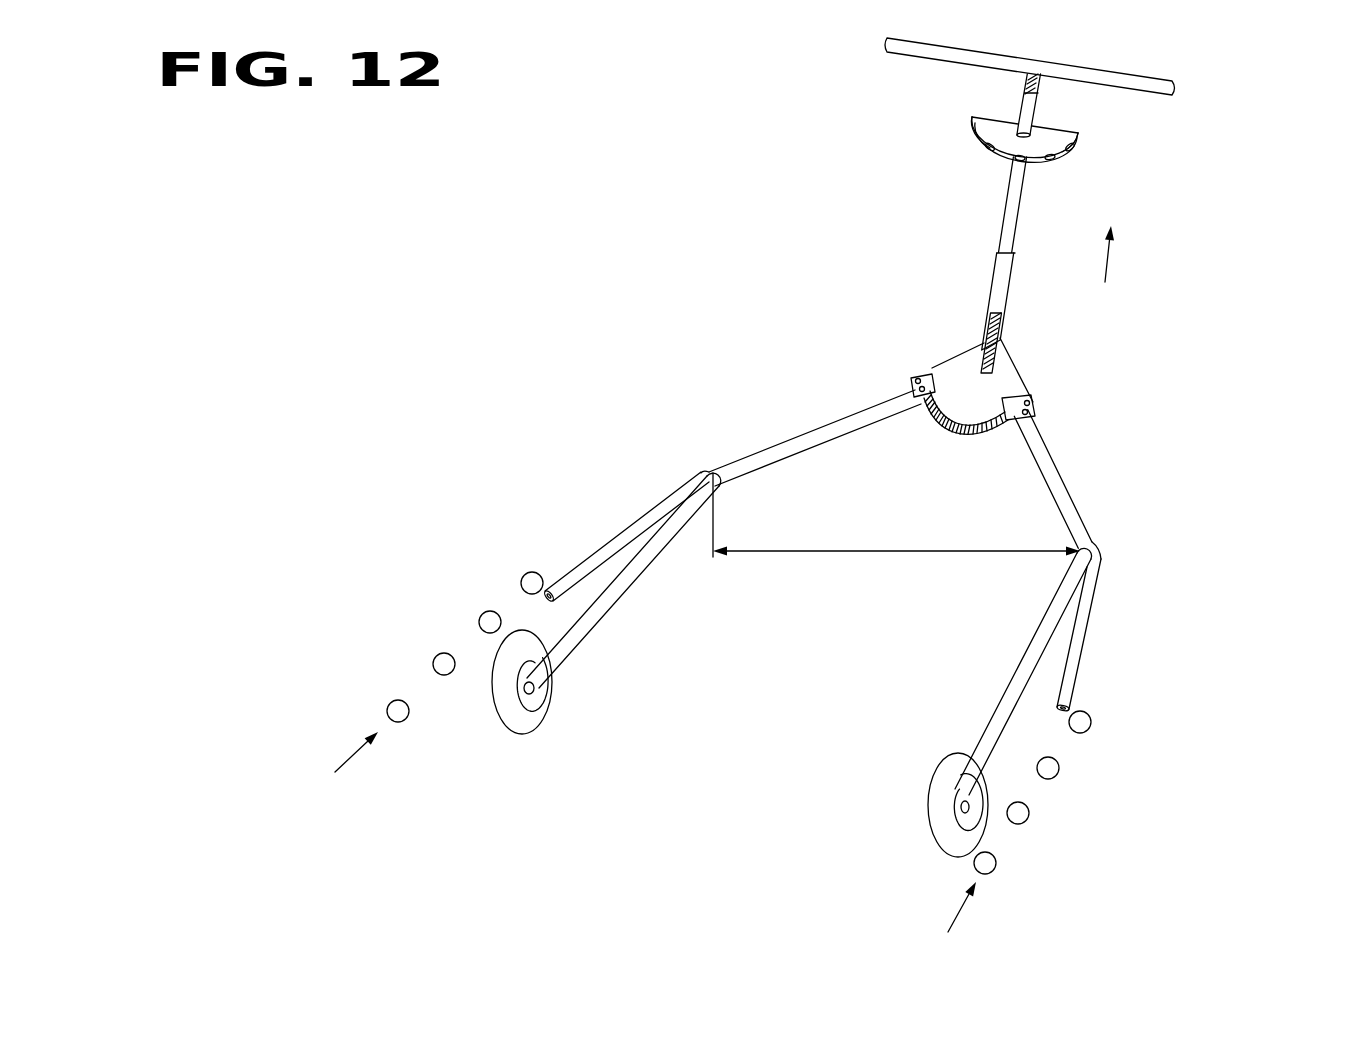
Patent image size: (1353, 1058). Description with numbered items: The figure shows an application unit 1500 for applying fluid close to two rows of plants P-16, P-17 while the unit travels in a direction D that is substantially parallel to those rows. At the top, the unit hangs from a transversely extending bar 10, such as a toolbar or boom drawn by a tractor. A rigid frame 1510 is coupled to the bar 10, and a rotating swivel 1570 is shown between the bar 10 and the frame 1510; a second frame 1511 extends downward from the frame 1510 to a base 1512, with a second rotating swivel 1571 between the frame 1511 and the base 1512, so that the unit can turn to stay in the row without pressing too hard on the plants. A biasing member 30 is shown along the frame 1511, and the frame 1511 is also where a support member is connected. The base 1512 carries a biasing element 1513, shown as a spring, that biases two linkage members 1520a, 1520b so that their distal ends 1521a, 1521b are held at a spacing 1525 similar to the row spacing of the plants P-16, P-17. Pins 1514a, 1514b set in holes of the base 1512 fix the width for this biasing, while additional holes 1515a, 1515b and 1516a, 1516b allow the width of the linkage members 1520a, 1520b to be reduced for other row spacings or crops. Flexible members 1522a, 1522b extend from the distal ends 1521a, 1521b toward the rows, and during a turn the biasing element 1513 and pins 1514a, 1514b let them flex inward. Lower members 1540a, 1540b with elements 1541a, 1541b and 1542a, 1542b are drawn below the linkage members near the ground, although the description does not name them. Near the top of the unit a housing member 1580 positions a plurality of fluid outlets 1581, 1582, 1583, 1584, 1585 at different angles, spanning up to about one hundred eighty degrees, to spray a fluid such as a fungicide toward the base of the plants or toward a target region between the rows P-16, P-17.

The transversely extending bar 10 is at (1137, 76).
The biasing member 30 is at (996, 313).
The application unit 1500 is at (735, 123).
The frame 1510 is at (1045, 115).
The frame 1511 is at (1018, 266).
The base 1512 is at (980, 345).
The biasing element 1513 is at (948, 435).
The pin 1514a is at (930, 372).
The pin 1514b is at (1017, 402).
The hole 1515a is at (912, 386).
The hole 1515b is at (1037, 405).
The hole 1516a is at (914, 394).
The hole 1516b is at (1033, 428).
The linkage member 1520a is at (755, 450).
The linkage member 1520b is at (1063, 487).
The distal end 1521a is at (722, 473).
The distal end 1521b is at (1087, 547).
The flexible member 1522a is at (594, 548).
The flexible member 1522b is at (1087, 628).
The spacing 1525 is at (893, 553).
The first support leg 1540a is at (627, 583).
The second support leg 1540b is at (1031, 638).
The first coil 1541a is at (549, 678).
The second coil 1541b is at (957, 778).
The first foot ring 1542a is at (512, 735).
The second foot ring 1542b is at (985, 830).
The rotating swivel 1570 is at (1033, 73).
The rotating swivel 1571 is at (1004, 334).
The housing member 1580 is at (998, 115).
The fluid outlet 1581 is at (972, 120).
The fluid outlet 1582 is at (1000, 150).
The fluid outlet 1583 is at (1013, 160).
The fluid outlet 1584 is at (1052, 158).
The fluid outlet 1585 is at (1080, 136).
The direction D is at (1112, 250).
The row of plants P-16 is at (347, 758).
The row of plants P-17 is at (963, 920).